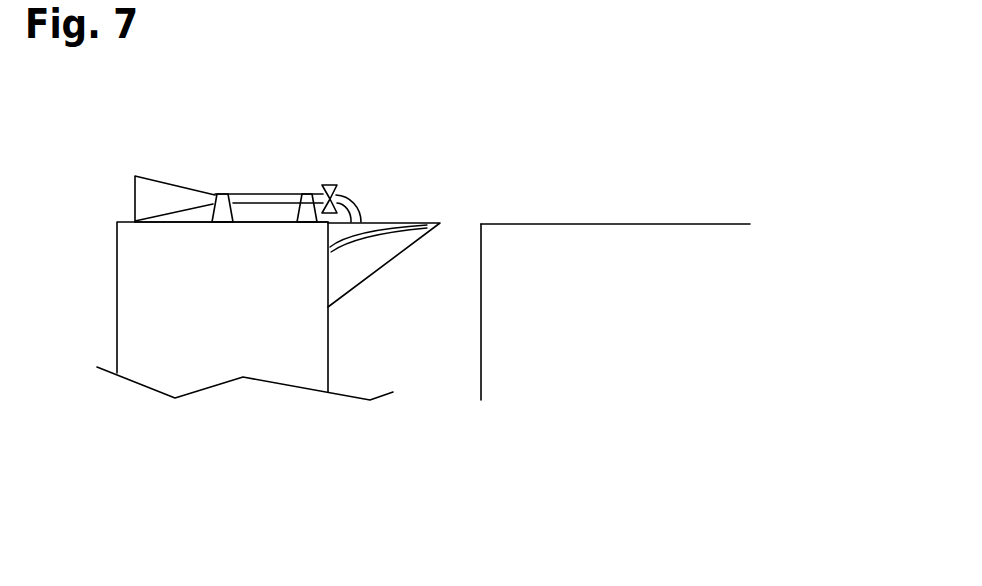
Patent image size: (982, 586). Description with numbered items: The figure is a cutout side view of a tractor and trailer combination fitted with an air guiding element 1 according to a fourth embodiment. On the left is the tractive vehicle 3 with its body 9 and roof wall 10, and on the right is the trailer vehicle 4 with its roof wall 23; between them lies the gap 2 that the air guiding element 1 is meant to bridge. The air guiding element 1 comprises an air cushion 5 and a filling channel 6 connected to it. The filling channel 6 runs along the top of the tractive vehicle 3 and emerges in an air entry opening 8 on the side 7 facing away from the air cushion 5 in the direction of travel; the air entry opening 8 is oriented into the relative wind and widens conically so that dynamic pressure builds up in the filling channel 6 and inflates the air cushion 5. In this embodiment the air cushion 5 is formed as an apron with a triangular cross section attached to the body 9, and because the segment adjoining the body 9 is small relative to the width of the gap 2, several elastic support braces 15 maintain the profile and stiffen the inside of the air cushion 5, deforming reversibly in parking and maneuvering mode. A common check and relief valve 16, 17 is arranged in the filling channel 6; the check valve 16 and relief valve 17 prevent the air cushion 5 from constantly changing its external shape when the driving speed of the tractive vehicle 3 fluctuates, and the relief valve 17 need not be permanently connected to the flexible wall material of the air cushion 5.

The air guiding element 1 is at (468, 175).
The gap 2 is at (459, 312).
The tractive vehicle 3 is at (233, 342).
The trailer vehicle 4 is at (593, 294).
The air cushion 5 is at (438, 223).
The filling channel 6 is at (245, 193).
The side facing away from the air cushion 7 is at (223, 193).
The air entry opening 8 is at (135, 195).
The body 9 is at (93, 337).
The roof wall 10 is at (252, 225).
The support braces 15 is at (368, 229).
The check valve 16 is at (324, 295).
The relief valve 17 is at (351, 336).
The roof wall 23 is at (560, 224).